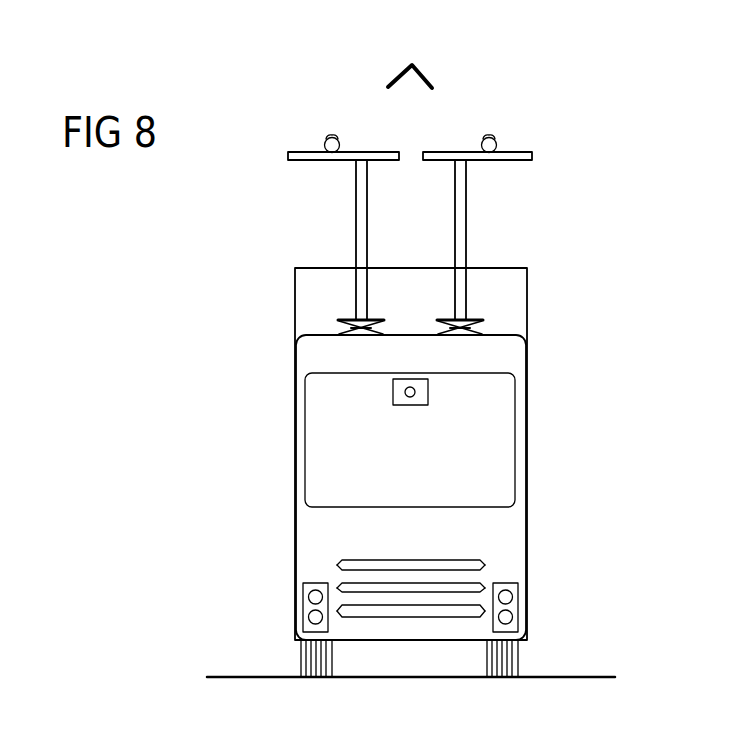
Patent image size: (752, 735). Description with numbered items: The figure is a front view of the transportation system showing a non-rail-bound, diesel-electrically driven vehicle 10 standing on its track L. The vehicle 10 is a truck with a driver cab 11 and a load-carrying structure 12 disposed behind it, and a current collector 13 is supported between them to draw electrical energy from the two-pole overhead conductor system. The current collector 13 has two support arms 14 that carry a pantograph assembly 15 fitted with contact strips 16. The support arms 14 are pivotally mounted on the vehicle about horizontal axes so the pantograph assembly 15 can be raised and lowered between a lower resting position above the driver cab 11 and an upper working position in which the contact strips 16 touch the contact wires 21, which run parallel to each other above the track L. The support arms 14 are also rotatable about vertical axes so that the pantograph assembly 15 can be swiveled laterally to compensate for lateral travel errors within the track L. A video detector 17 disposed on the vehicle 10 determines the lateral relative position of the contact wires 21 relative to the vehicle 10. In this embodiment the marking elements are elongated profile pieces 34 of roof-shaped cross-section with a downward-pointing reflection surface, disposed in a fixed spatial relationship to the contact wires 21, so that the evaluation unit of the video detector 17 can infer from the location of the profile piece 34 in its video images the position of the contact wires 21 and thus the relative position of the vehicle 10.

The vehicle 10 is at (486, 472).
The driver cab 11 is at (513, 534).
The load-carrying structure 12 is at (513, 303).
The current collector 13 is at (400, 219).
The support arms 14 is at (460, 233).
The pantograph assembly 15 is at (268, 160).
The contact strips 16 is at (348, 161).
The video detector 17 is at (418, 392).
The contact wires 21 is at (326, 139).
The profile pieces 34 is at (422, 72).
The track L is at (578, 676).